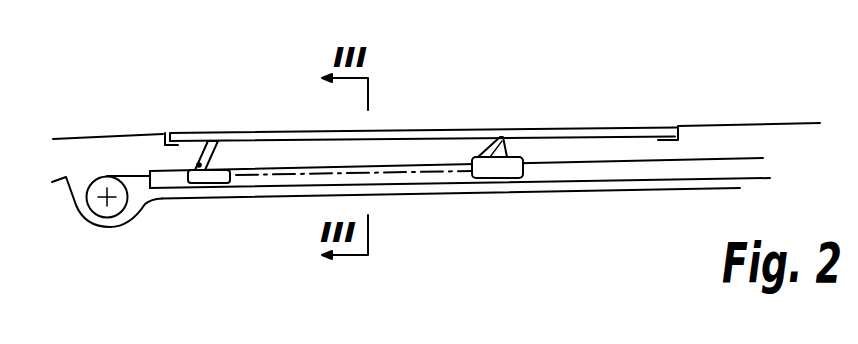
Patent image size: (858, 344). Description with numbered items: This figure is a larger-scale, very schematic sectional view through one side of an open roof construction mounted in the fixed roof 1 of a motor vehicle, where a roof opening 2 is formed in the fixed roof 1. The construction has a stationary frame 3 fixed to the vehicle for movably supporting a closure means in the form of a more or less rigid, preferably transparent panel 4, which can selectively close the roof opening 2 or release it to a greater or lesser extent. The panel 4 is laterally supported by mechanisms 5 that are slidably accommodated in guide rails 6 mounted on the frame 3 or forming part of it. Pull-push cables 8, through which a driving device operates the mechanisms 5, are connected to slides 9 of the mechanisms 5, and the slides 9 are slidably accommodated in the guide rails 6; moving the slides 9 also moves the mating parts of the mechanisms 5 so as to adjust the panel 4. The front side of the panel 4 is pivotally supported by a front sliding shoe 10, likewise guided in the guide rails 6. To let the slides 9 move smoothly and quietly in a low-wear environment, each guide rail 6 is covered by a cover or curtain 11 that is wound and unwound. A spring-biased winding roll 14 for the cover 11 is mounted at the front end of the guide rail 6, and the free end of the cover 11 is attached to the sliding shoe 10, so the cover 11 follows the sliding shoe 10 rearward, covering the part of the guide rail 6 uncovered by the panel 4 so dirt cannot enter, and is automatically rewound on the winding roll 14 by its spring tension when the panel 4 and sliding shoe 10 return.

The fixed roof 1 is at (723, 125).
The roof opening 2 is at (672, 128).
The stationary frame 3 is at (642, 187).
The panel 4 is at (303, 137).
The mechanism 5 is at (513, 137).
The guide rail 6 is at (695, 173).
The pull-push cable 8 is at (402, 173).
The slide 9 is at (478, 160).
The front sliding shoe 10 is at (216, 133).
The cover 11 is at (137, 174).
The winding roll 14 is at (101, 176).